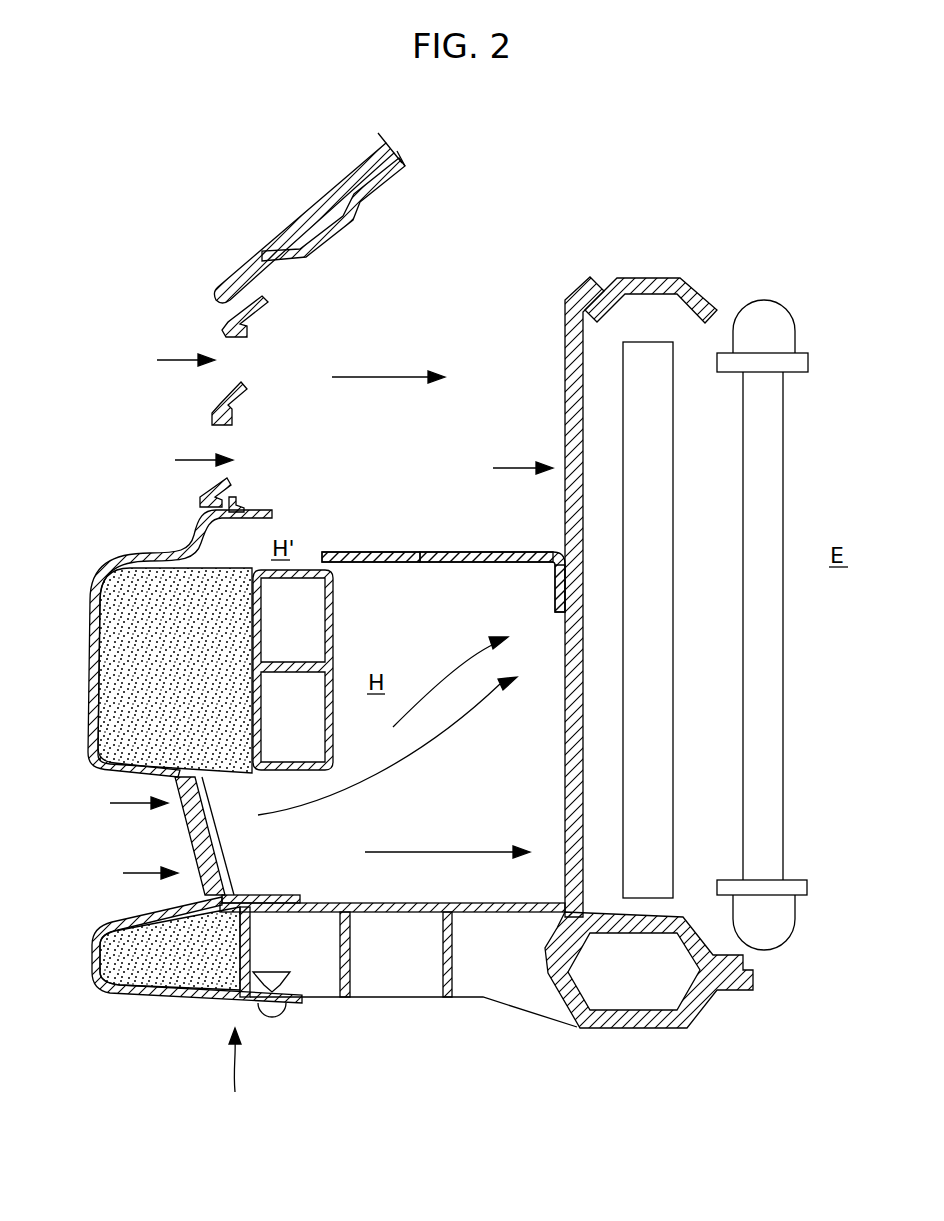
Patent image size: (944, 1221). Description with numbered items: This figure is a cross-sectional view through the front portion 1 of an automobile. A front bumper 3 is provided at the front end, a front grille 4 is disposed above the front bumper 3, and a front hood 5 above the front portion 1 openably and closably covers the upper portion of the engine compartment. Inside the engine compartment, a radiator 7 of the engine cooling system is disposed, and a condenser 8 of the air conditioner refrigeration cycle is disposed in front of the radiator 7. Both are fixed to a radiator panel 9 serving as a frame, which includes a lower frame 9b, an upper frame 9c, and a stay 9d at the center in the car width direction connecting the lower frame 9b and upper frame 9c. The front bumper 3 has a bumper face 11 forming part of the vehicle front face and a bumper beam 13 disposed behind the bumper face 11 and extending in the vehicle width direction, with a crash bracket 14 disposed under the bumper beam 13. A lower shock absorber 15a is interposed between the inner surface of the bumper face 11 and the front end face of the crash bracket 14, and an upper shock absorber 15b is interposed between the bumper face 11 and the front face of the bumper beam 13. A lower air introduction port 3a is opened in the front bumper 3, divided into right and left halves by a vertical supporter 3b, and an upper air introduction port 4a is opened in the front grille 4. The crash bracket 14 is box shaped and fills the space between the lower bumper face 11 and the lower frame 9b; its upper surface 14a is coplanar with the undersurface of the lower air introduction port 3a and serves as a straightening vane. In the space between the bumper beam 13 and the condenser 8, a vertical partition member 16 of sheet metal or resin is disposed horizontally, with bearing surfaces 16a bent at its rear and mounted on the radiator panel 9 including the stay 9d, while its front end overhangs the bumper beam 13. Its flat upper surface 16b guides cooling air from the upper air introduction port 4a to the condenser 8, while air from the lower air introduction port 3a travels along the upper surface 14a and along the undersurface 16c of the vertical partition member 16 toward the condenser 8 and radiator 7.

The front portion 1 is at (287, 148).
The front bumper 3 is at (308, 948).
The lower air introduction port 3a is at (257, 868).
The vertical supporter 3b is at (192, 832).
The front grille 4 is at (224, 330).
The upper air introduction port 4a is at (292, 452).
The front hood 5 is at (362, 160).
The radiator 7 is at (764, 729).
The condenser 8 is at (662, 614).
The radiator panel 9 is at (626, 646).
The lower frame 9b is at (632, 1028).
The upper frame 9c is at (650, 278).
The stay 9d is at (566, 333).
The bumper face 11 is at (124, 566).
The bumper beam 13 is at (334, 598).
The crash bracket 14 is at (397, 998).
The upper surface 14a is at (352, 903).
The lower shock absorber 15a is at (148, 986).
The upper shock absorber 15b is at (166, 578).
The vertical partition member 16 is at (462, 548).
The bearing surface 16a is at (553, 592).
The upper surface 16b is at (388, 552).
The undersurface 16c is at (437, 563).